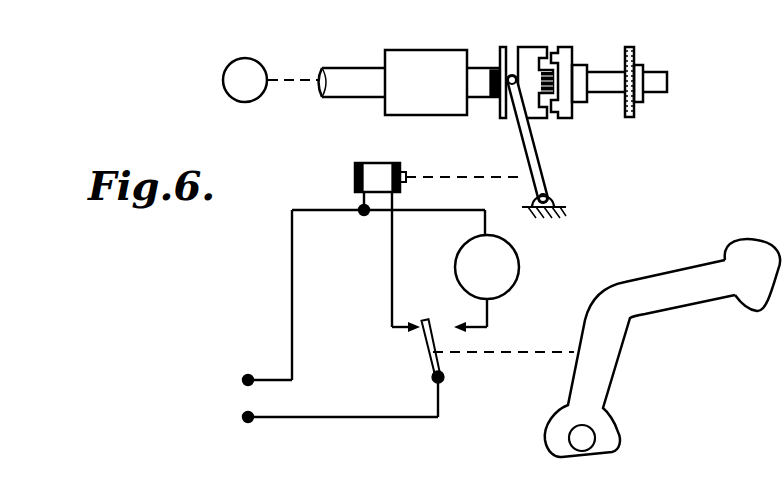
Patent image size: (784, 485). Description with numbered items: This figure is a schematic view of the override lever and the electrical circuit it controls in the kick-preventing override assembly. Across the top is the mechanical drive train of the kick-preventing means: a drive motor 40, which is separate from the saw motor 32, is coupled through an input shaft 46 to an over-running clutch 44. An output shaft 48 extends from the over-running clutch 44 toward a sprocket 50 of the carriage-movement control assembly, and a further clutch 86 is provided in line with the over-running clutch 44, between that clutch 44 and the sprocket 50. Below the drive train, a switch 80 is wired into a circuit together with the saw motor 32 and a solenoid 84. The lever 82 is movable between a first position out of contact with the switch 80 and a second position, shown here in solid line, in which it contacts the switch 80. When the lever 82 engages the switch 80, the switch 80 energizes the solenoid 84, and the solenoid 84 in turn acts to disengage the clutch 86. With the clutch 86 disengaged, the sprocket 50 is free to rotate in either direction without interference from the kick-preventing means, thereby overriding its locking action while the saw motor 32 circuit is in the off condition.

The drive motor 40 is at (222, 78).
The input shaft 46 is at (340, 68).
The over-running clutch 44 is at (417, 40).
The output shaft 48 is at (478, 68).
The clutch 86 is at (567, 37).
The sprocket 50 is at (634, 56).
The solenoid 84 is at (377, 168).
The saw motor 32 is at (520, 264).
The switch 80 is at (427, 346).
The lever 82 is at (677, 280).